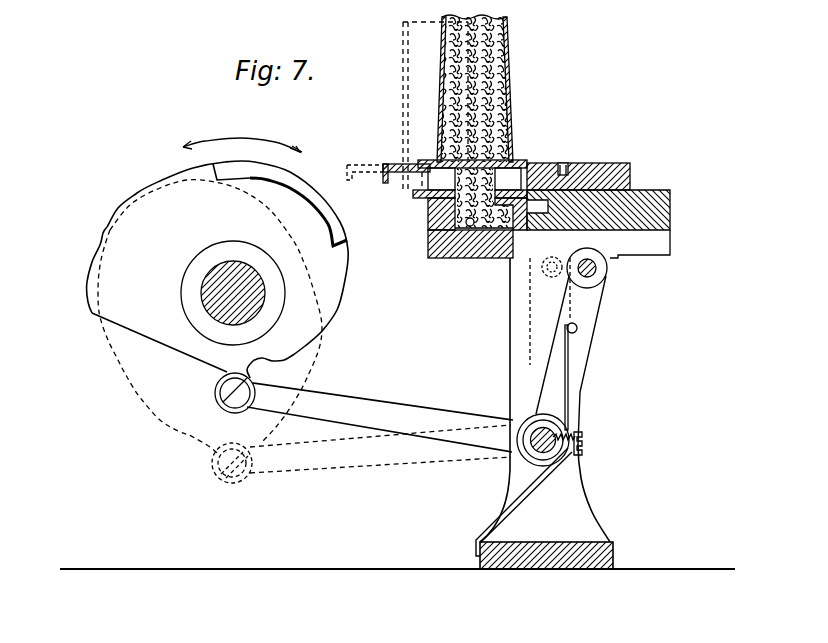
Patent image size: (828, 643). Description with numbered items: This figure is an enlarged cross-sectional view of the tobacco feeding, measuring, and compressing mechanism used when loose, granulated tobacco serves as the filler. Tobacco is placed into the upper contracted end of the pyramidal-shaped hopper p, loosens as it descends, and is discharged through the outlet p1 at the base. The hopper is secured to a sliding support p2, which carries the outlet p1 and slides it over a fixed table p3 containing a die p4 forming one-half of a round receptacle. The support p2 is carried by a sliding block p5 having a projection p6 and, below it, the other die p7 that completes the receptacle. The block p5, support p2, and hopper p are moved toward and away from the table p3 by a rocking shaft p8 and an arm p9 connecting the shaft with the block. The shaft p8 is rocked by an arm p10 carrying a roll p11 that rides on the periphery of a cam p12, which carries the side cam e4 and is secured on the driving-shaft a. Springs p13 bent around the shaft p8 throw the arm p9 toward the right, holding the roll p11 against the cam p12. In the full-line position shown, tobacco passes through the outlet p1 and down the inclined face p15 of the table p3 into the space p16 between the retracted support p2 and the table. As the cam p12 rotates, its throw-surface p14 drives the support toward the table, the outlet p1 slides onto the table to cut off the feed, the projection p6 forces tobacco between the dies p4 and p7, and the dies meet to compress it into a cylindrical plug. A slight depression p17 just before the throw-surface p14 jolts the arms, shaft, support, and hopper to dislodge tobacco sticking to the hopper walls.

The hopper p is at (513, 87).
The outlet p1 is at (490, 168).
The sliding support p2 is at (390, 160).
The fixed table p3 is at (428, 230).
The die p4 is at (428, 247).
The sliding block p5 is at (637, 198).
The projection p6 is at (556, 163).
The die p7 is at (490, 253).
The rocking shaft p8 is at (553, 437).
The arm p9 is at (585, 337).
The arm p10 is at (404, 410).
The roll p11 is at (215, 386).
The cam p12 is at (152, 210).
The spring p13 is at (568, 385).
The throw-surface p14 is at (125, 333).
The inclined face p15 is at (465, 198).
The space p16 is at (467, 235).
The depression p17 is at (105, 243).
The side cam e4 is at (252, 174).
The driving-shaft a is at (205, 290).